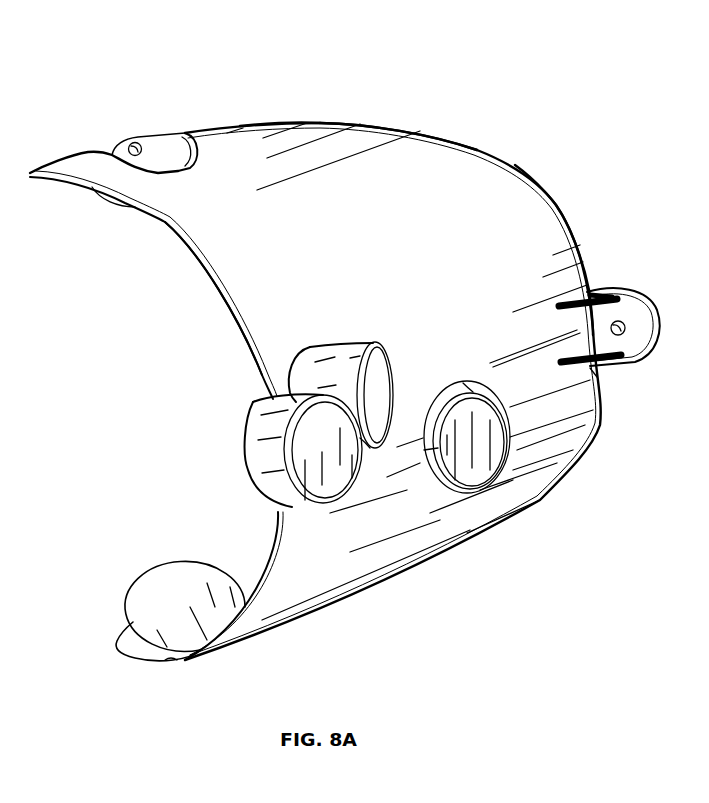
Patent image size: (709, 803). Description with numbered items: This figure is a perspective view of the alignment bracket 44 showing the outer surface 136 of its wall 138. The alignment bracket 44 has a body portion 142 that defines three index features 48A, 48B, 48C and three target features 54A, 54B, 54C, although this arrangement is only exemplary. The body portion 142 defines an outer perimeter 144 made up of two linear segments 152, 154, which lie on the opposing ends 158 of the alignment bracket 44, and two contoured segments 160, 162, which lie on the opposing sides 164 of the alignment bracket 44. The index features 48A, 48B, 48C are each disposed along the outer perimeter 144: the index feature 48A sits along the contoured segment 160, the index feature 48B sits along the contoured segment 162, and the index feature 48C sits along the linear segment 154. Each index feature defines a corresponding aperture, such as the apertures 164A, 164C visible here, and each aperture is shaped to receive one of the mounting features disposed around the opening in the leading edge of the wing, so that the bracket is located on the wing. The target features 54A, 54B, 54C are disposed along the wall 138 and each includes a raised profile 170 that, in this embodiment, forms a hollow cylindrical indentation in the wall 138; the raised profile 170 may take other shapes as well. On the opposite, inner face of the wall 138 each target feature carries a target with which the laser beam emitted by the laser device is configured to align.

The alignment bracket 44 is at (476, 621).
The index feature 48A is at (146, 133).
The index feature 48B is at (144, 593).
The index feature 48C is at (612, 315).
The target feature 54A is at (381, 368).
The target feature 54B is at (333, 462).
The target feature 54C is at (490, 450).
The outer surface 136 is at (420, 266).
The wall 138 is at (550, 203).
The body portion 142 is at (240, 199).
The outer perimeter 144 is at (428, 133).
The linear segment 152 is at (217, 281).
The linear segment 154 is at (583, 242).
The opposing ends 158 is at (533, 130).
The contoured segment 160 is at (288, 125).
The contoured segment 162 is at (125, 645).
The opposing sides 164 is at (372, 44).
The aperture 164A is at (131, 144).
The aperture 164C is at (623, 334).
The raised profile 170 is at (315, 336).